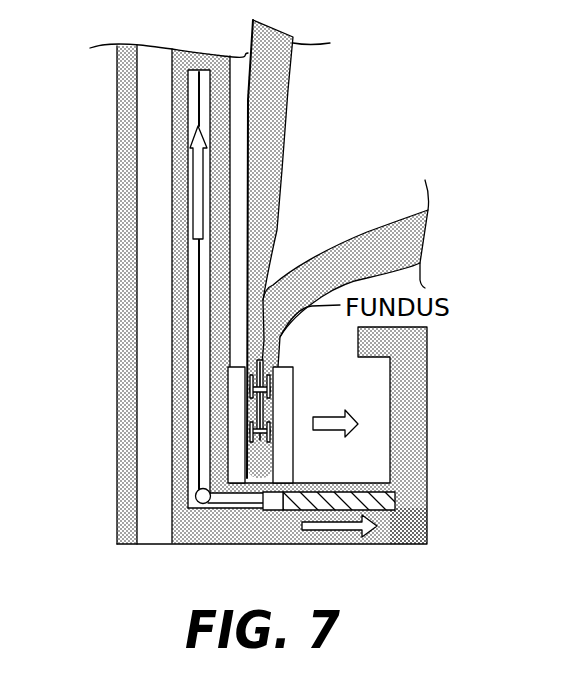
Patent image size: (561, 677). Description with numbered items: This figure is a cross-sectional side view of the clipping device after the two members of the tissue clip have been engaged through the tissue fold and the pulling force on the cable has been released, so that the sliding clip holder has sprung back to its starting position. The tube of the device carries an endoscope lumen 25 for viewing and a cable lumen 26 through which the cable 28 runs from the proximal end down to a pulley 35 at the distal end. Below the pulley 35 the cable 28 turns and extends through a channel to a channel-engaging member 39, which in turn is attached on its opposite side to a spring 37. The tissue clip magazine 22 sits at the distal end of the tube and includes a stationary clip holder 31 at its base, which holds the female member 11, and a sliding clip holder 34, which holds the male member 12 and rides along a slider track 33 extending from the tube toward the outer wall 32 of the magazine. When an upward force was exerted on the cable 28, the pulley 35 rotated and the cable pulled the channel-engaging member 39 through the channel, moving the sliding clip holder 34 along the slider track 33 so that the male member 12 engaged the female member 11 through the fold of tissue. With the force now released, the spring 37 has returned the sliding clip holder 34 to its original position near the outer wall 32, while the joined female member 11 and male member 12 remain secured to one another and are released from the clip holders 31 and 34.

The female member 11 is at (240, 388).
The male member 12 is at (270, 387).
The tissue clip magazine 22 is at (427, 371).
The endoscope lumen 25 is at (158, 425).
The cable lumen 26 is at (210, 103).
The cable 28 is at (199, 127).
The stationary clip holder 31 is at (232, 455).
The outer wall 32 is at (413, 413).
The slider track 33 is at (383, 485).
The sliding clip holder 34 is at (292, 460).
The pulley 35 is at (196, 497).
The spring 37 is at (395, 497).
The channel-engaging member 39 is at (278, 505).